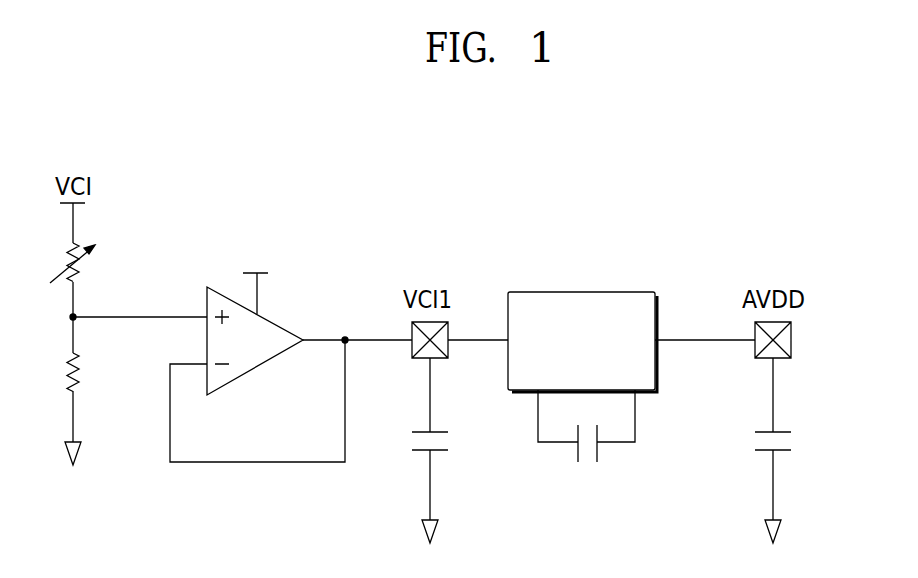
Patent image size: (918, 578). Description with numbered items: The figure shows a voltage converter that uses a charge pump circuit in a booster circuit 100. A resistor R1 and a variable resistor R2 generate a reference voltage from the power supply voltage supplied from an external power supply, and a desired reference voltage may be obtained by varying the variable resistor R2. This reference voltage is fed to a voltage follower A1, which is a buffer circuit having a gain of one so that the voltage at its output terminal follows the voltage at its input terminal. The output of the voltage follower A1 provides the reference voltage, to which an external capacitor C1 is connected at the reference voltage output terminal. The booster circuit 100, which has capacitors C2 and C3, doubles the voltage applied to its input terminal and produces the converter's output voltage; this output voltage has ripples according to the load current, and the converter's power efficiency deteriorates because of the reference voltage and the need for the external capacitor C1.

The resistor R1 is at (89, 372).
The variable resistor R2 is at (89, 263).
The voltage follower A1 is at (276, 323).
The capacitor C1 is at (450, 439).
The booster circuit 100 is at (583, 292).
The capacitor C2 is at (586, 448).
The capacitor C3 is at (795, 439).